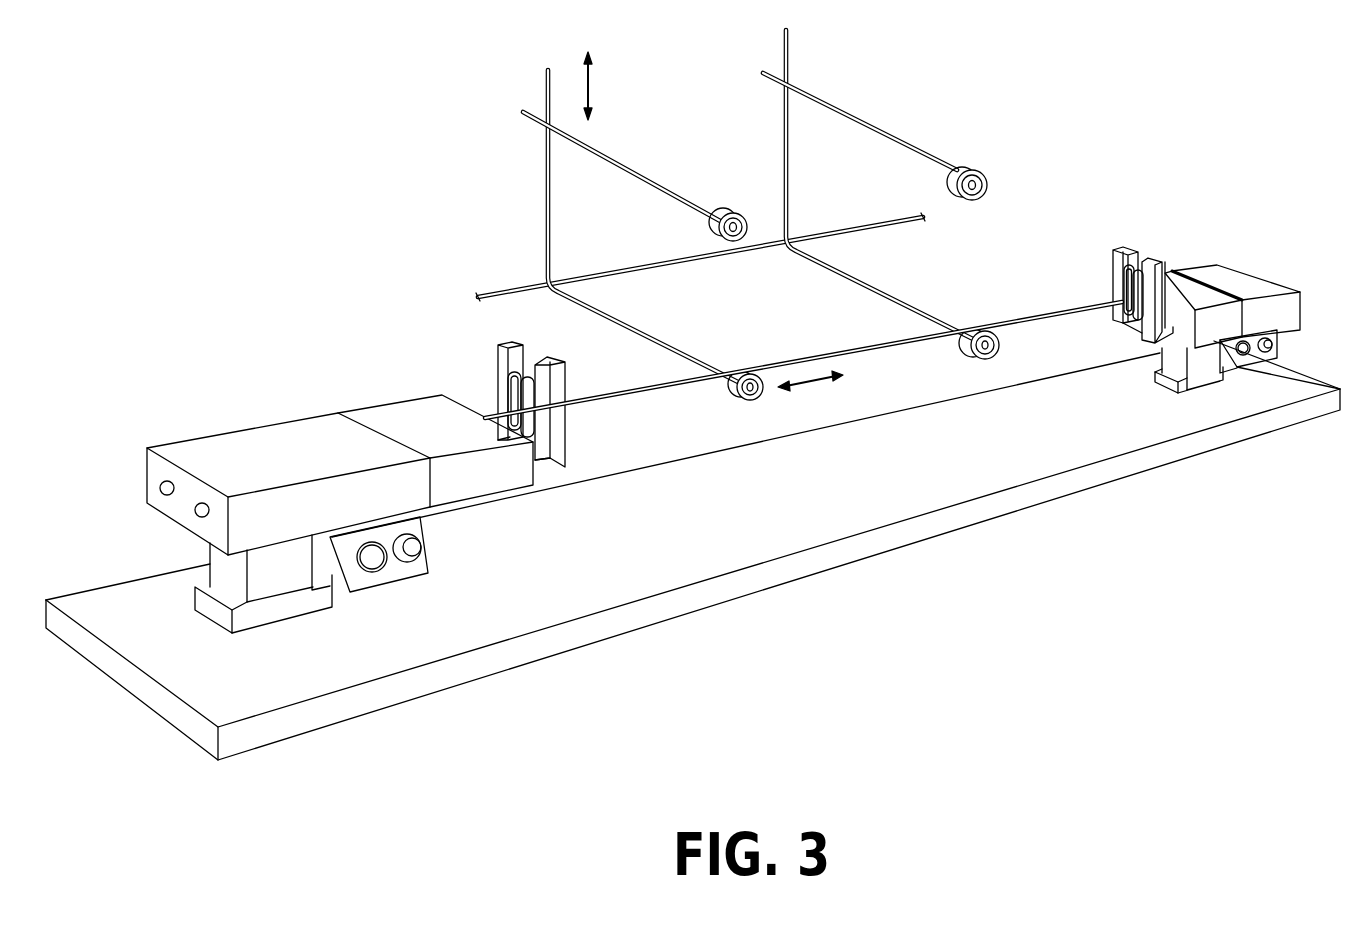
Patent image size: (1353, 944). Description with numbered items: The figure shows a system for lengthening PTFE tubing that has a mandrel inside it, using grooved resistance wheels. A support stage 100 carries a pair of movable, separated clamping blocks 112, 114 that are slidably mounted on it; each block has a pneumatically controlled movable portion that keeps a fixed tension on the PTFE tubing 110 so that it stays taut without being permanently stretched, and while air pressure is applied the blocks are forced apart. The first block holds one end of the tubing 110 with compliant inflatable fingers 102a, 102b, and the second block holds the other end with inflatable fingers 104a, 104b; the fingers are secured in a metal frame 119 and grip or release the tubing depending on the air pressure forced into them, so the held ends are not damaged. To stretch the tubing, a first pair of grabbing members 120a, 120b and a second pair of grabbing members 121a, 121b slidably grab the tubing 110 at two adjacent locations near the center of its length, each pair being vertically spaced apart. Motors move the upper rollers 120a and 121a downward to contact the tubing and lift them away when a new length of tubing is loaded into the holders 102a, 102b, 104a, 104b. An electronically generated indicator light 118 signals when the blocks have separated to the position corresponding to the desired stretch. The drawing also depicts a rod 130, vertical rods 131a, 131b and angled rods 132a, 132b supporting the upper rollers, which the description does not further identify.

The support stage 100 is at (343, 150).
The compliant inflatable finger 102a is at (517, 390).
The compliant inflatable finger 102b is at (527, 403).
The inflatable finger 104a is at (1122, 285).
The inflatable finger 104b is at (1130, 316).
The PTFE tubing 110 is at (880, 352).
The clamping block 112 is at (415, 420).
The clamping block 114 is at (1212, 266).
The indicator light 118 is at (380, 577).
The metal frame 119 is at (502, 387).
The grabbing member 120a is at (730, 202).
The grabbing member 120b is at (750, 407).
The grabbing member 121a is at (965, 165).
The grabbing member 121b is at (984, 358).
The horizontal connecting rod 130 is at (880, 233).
The first vertical rod 131a is at (543, 185).
The second vertical rod 131b is at (860, 283).
The first diagonal rod 132a is at (640, 167).
The second diagonal rod 132b is at (873, 130).